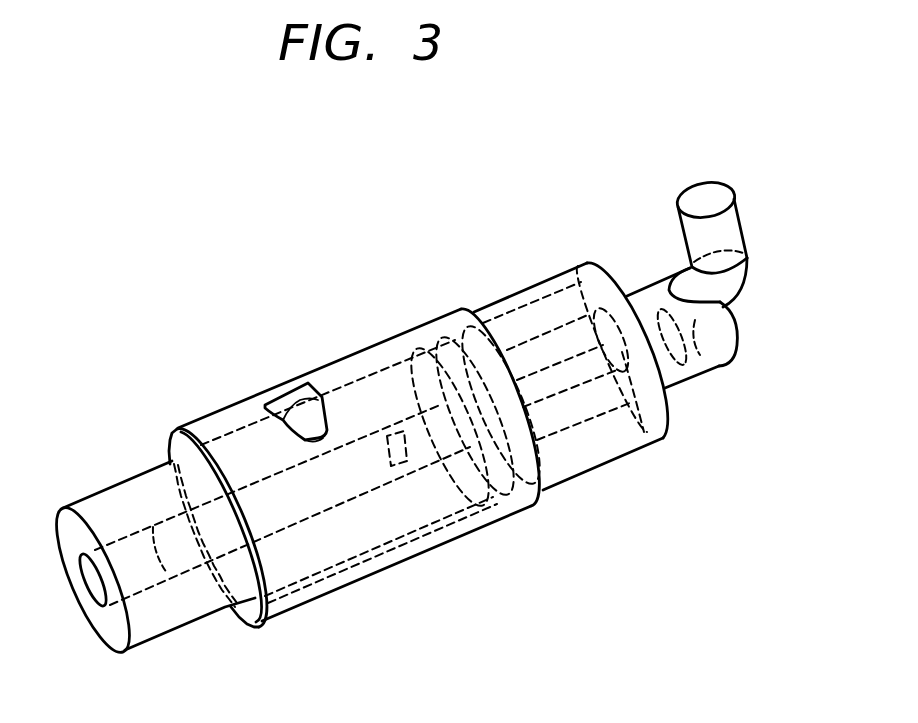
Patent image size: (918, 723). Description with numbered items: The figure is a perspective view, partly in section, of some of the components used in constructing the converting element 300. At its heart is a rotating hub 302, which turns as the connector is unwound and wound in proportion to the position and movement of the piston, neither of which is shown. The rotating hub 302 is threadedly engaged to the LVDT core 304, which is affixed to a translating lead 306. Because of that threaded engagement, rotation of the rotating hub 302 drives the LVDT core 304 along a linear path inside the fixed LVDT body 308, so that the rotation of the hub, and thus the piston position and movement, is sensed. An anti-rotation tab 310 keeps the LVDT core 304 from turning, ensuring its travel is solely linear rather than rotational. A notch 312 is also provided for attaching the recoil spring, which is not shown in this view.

The converting element 300 is at (371, 268).
The rotating hub 302 is at (498, 518).
The LVDT core 304 is at (273, 498).
The translating lead 306 is at (672, 372).
The fixed LVDT body 308 is at (123, 497).
The anti-rotation tab 310 is at (727, 233).
The notch 312 is at (283, 395).